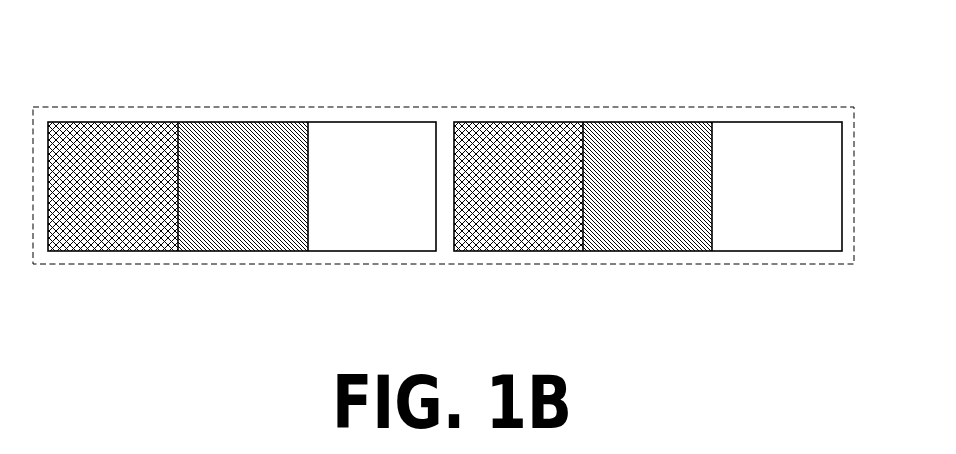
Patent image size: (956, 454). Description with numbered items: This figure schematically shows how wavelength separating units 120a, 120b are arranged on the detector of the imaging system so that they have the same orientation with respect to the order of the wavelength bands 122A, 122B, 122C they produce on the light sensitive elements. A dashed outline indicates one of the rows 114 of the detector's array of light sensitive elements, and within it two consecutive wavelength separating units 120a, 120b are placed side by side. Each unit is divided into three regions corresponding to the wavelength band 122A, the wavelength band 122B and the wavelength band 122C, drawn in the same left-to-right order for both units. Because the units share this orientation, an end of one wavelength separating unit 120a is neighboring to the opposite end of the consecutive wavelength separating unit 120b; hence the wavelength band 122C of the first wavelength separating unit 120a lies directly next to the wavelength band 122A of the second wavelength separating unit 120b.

The rows 114 is at (63, 107).
The wavelength separating unit 120a is at (243, 104).
The consecutive wavelength separating unit 120b is at (636, 104).
The wavelength band 122A is at (103, 227).
The wavelength band 122B is at (242, 233).
The wavelength band 122C is at (371, 232).